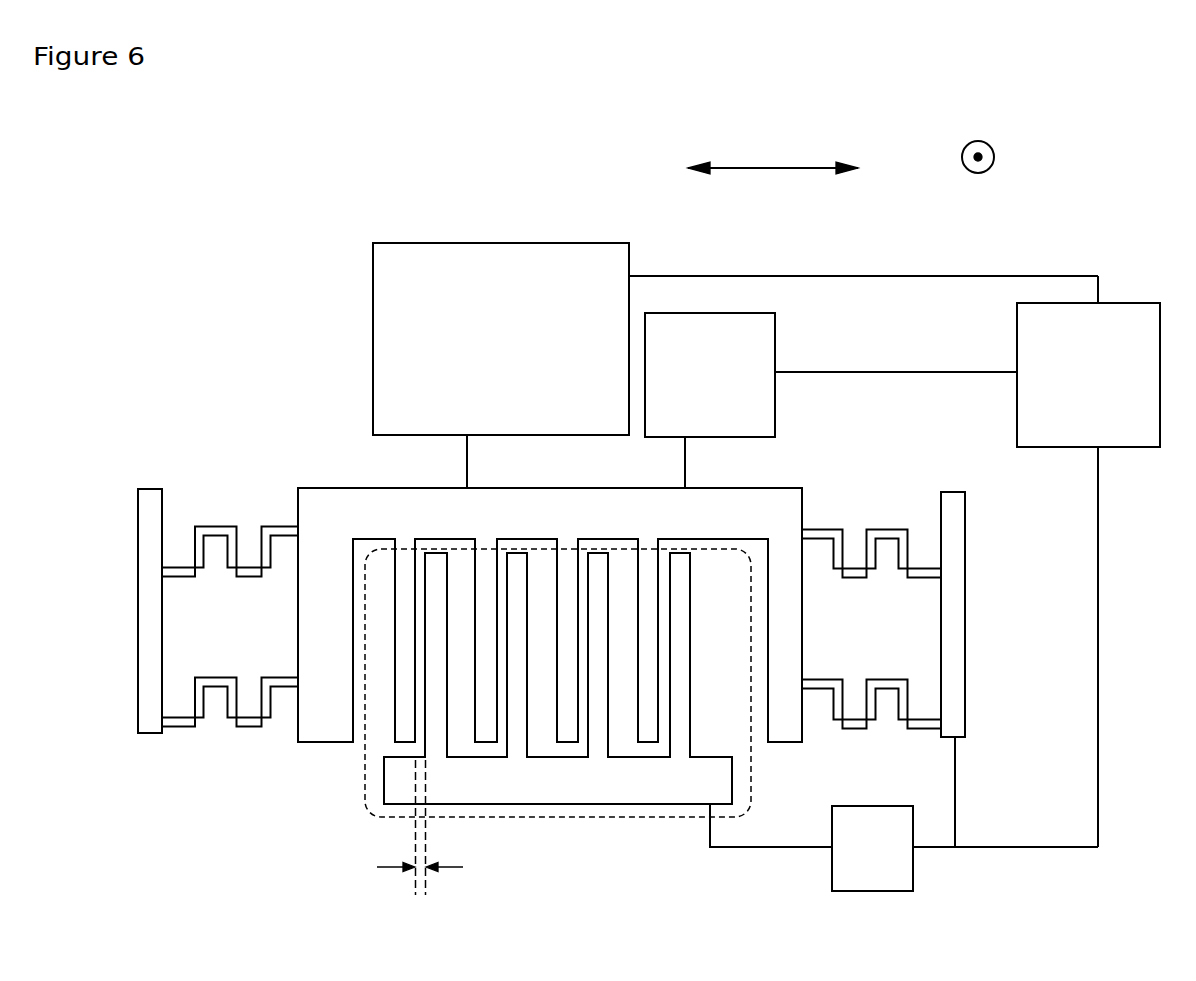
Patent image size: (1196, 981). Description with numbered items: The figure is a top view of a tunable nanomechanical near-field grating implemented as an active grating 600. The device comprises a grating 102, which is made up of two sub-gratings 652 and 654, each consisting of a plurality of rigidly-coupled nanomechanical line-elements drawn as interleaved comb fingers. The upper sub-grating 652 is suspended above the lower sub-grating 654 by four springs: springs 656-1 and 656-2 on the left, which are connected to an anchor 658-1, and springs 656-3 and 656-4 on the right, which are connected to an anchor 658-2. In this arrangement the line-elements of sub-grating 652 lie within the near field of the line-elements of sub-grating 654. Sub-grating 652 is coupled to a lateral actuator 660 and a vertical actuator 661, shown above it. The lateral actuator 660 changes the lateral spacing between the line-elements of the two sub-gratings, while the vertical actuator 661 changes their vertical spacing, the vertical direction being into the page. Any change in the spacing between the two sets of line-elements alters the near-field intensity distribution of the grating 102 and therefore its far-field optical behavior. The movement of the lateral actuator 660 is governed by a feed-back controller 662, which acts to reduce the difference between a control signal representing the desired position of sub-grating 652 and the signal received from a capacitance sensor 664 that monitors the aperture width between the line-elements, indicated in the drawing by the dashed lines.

The active grating 600 is at (313, 245).
The sub-grating 652 is at (383, 530).
The sub-grating 654 is at (598, 797).
The spring 656-1 is at (270, 525).
The spring 656-2 is at (260, 727).
The spring 656-3 is at (840, 530).
The spring 656-4 is at (835, 679).
The anchor 658-1 is at (145, 493).
The anchor 658-2 is at (953, 623).
The grating 102 is at (507, 816).
The lateral actuator 660 is at (522, 386).
The vertical actuator 661 is at (727, 418).
The feed-back controller 662 is at (1105, 418).
The capacitance sensor 664 is at (892, 860).